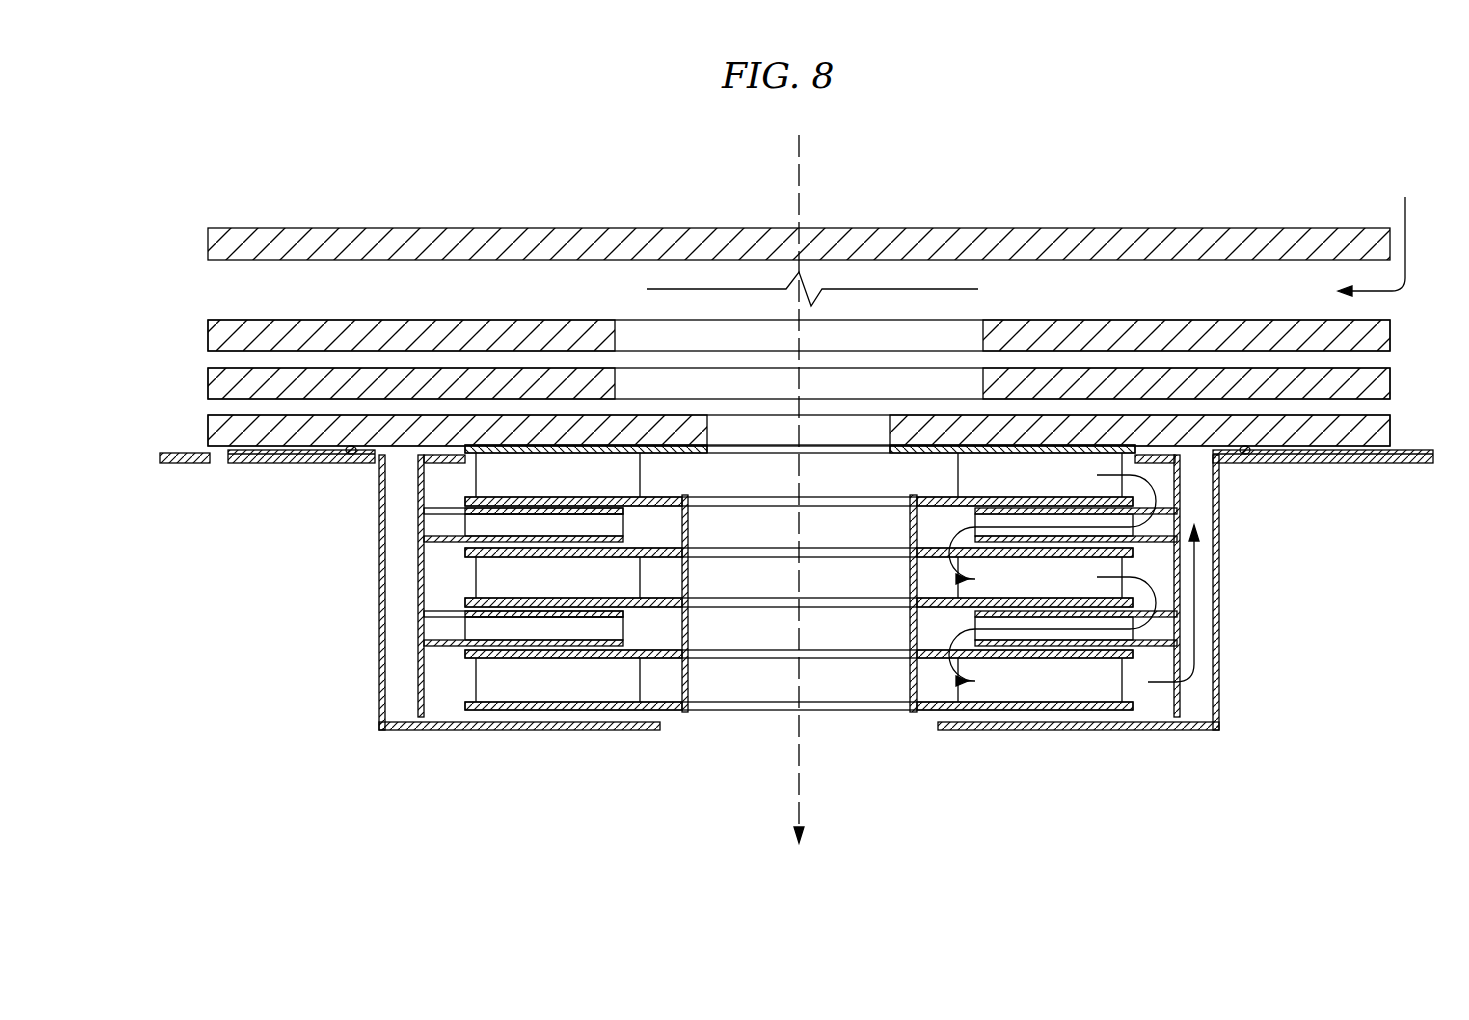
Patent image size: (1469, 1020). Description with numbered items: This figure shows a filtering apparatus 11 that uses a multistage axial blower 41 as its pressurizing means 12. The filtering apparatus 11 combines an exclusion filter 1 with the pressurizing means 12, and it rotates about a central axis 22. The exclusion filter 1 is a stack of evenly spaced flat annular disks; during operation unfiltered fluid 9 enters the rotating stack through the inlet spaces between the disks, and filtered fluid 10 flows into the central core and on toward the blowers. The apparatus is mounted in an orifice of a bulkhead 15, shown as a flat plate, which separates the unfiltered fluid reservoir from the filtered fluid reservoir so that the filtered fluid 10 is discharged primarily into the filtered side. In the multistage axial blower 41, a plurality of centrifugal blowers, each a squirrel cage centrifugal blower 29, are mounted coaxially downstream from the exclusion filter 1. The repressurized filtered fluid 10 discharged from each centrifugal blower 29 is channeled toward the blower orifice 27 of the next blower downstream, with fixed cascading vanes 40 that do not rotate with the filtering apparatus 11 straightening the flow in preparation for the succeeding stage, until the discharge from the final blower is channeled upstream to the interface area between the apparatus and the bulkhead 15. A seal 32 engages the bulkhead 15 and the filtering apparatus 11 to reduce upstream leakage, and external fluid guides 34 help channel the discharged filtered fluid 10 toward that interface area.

The exclusion filter 1 is at (1395, 228).
The unfiltered fluid 9 is at (1374, 232).
The filtered fluid 10 is at (996, 671).
The filtering apparatus 11 is at (190, 227).
The pressurizing means 12 is at (263, 579).
The multistage axial blower 41 is at (378, 708).
The bulkhead 15 is at (1352, 464).
The central axis 22 is at (802, 156).
The blower orifice 27 is at (681, 659).
The squirrel cage centrifugal blower 29 is at (476, 483).
The seal 32 is at (1250, 455).
The external fluid guides 34 is at (1222, 692).
The fixed cascading vanes 40 is at (975, 627).